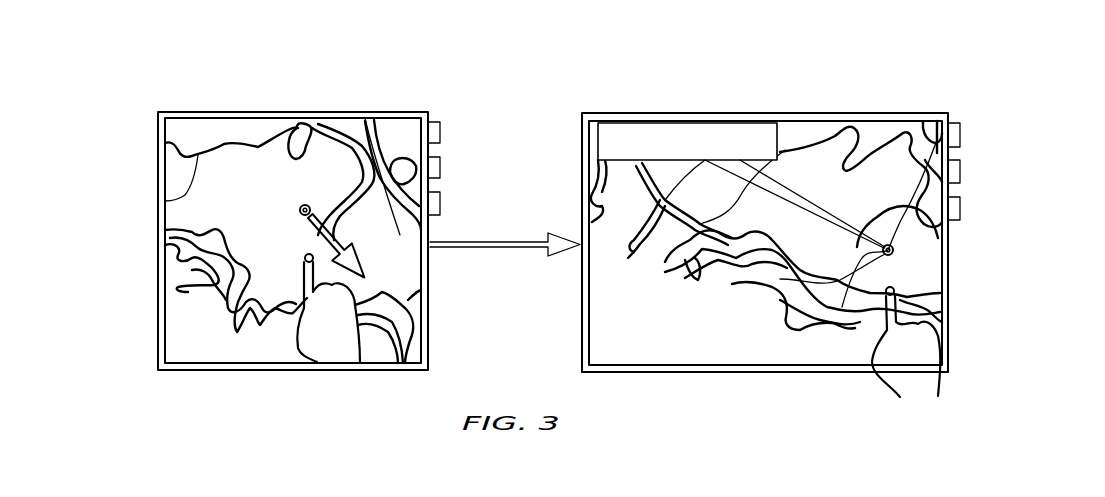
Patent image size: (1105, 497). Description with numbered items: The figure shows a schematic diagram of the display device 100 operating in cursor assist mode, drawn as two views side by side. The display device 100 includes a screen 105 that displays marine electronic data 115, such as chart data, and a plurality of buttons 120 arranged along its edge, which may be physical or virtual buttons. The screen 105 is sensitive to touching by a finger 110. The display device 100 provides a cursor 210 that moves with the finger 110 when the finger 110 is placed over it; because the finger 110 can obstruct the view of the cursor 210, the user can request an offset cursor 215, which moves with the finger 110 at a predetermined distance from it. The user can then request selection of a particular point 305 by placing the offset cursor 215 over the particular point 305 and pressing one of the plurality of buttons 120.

The display device 100 is at (236, 58).
The screen 105 is at (207, 117).
The finger 110 is at (300, 272).
The marine electronic data 115 is at (268, 160).
The plurality of buttons 120 is at (440, 132).
The cursor 210 is at (316, 272).
The offset cursor 215 is at (305, 205).
The particular point 305 is at (893, 253).